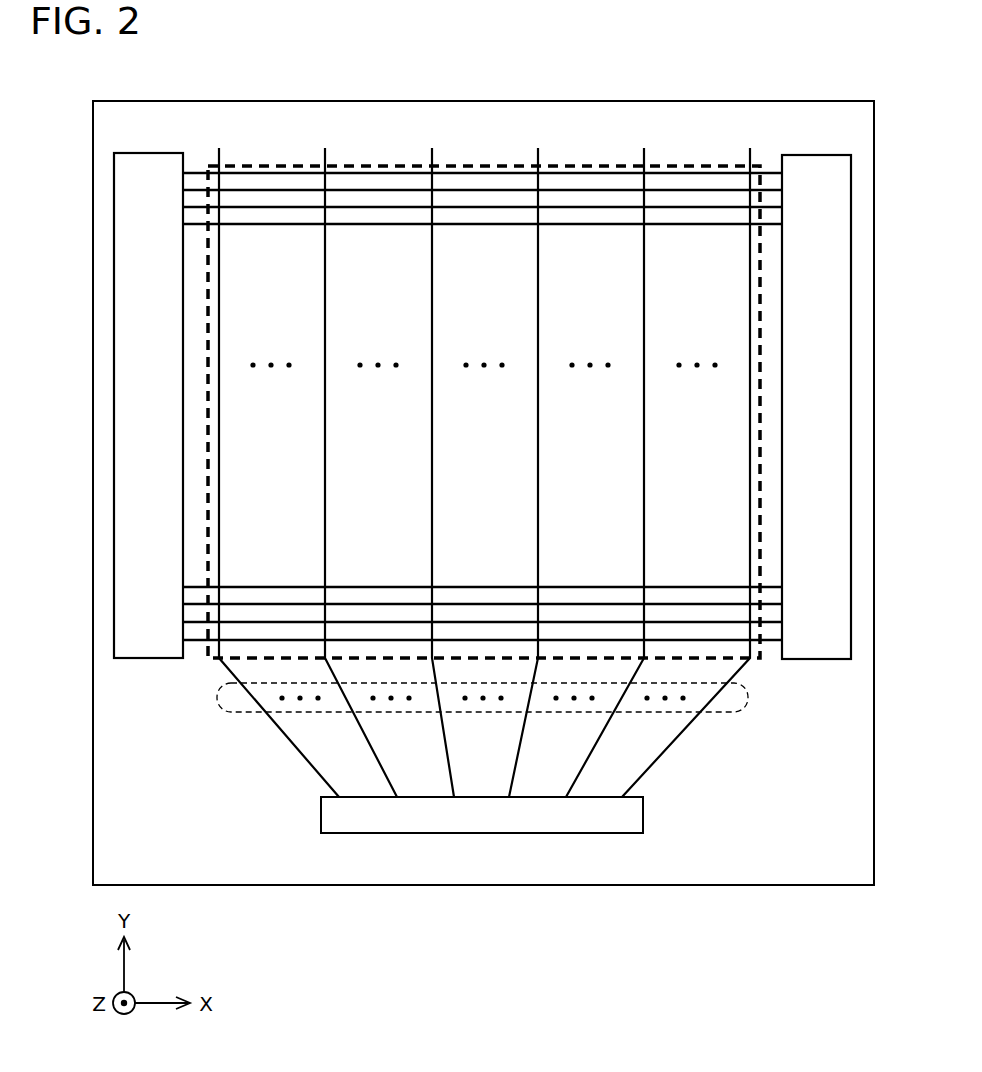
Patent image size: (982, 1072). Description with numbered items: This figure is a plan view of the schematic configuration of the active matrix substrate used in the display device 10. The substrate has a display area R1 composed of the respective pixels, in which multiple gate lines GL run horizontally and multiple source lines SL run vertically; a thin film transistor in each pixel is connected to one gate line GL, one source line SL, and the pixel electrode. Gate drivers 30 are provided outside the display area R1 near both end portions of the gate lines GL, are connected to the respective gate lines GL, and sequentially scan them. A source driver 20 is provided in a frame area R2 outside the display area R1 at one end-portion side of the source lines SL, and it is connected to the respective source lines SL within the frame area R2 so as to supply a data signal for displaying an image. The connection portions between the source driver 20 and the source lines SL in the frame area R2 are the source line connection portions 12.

The display device 10 is at (874, 101).
The gate driver 30 is at (135, 153).
The gate line GL is at (196, 170).
The source line SL is at (222, 152).
The display area R1 is at (762, 158).
The source line connection portion 12 is at (219, 703).
The source driver 20 is at (643, 815).
The frame area R2 is at (759, 665).